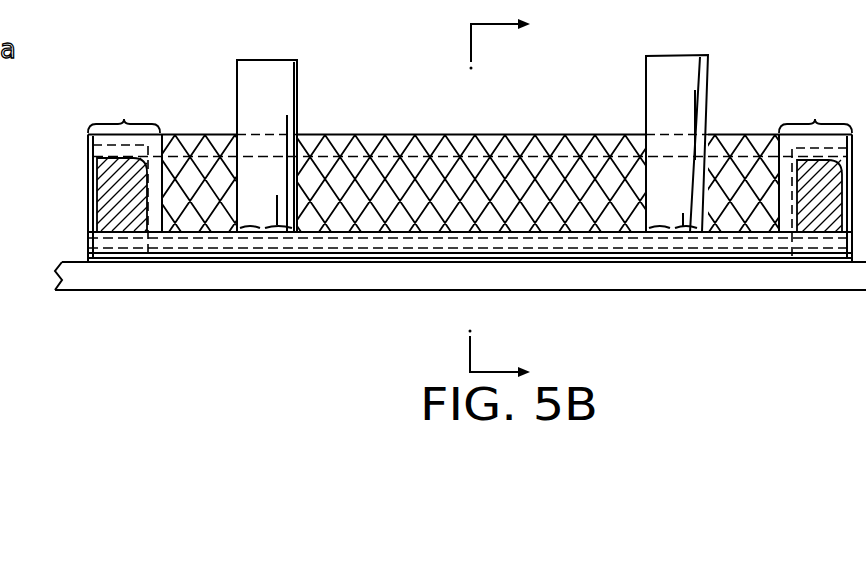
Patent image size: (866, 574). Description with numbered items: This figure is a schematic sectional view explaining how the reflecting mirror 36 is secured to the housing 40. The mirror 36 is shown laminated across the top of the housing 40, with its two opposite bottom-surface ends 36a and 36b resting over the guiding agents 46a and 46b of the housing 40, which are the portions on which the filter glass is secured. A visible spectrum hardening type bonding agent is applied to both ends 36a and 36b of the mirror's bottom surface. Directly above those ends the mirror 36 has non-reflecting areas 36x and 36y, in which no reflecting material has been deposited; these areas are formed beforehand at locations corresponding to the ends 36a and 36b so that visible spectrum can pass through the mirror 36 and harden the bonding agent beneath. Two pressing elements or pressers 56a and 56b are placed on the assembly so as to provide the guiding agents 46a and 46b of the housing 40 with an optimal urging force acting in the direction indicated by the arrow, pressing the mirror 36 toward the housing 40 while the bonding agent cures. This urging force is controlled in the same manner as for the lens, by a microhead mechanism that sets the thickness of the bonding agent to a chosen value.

The reflecting mirror 36 is at (383, 134).
The non-reflecting area 36y is at (124, 105).
The non-reflecting area 36x is at (815, 108).
The end of bottom surface of reflecting mirror 36b is at (100, 215).
The end of bottom surface of reflecting mirror 36a is at (822, 258).
The guiding agent 46b is at (88, 142).
The guiding agent 46a is at (780, 135).
The presser 56b is at (268, 68).
The presser 56a is at (669, 68).
The housing 40 is at (672, 280).